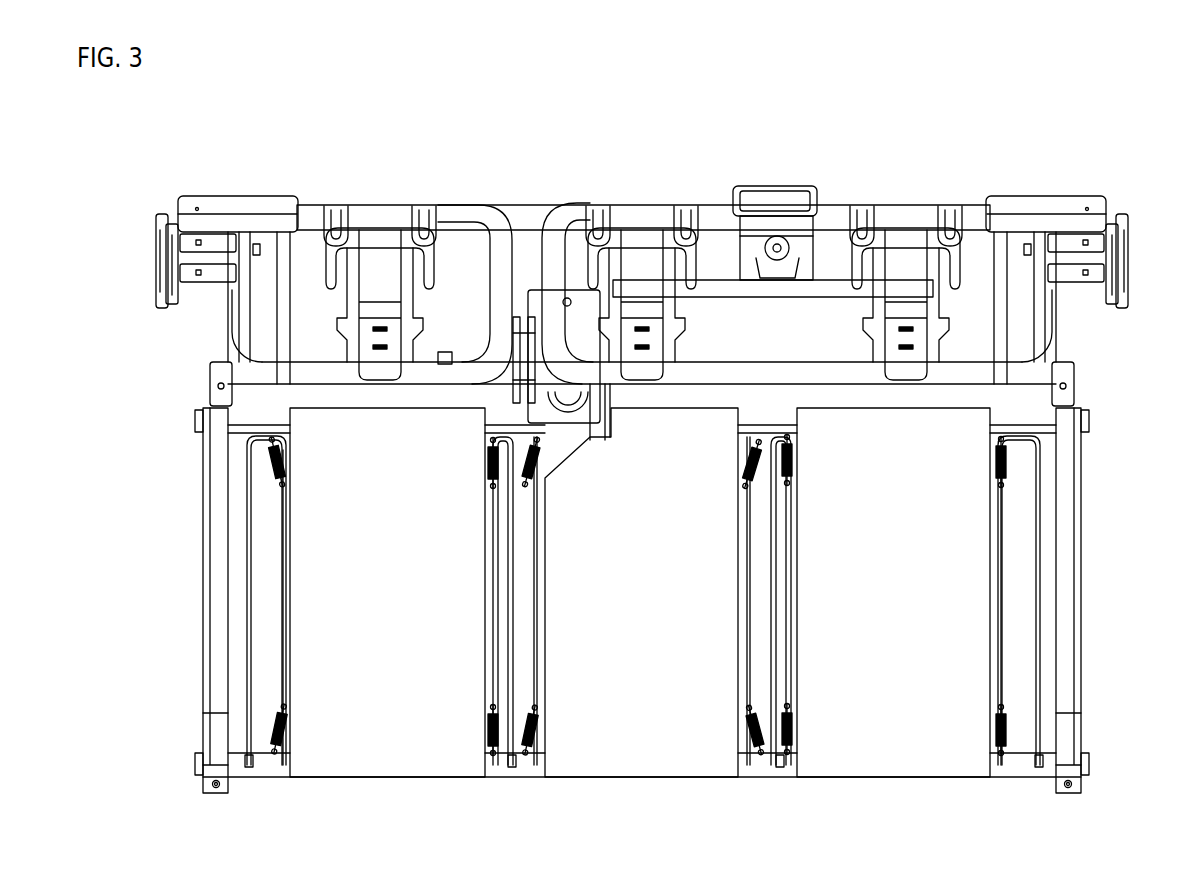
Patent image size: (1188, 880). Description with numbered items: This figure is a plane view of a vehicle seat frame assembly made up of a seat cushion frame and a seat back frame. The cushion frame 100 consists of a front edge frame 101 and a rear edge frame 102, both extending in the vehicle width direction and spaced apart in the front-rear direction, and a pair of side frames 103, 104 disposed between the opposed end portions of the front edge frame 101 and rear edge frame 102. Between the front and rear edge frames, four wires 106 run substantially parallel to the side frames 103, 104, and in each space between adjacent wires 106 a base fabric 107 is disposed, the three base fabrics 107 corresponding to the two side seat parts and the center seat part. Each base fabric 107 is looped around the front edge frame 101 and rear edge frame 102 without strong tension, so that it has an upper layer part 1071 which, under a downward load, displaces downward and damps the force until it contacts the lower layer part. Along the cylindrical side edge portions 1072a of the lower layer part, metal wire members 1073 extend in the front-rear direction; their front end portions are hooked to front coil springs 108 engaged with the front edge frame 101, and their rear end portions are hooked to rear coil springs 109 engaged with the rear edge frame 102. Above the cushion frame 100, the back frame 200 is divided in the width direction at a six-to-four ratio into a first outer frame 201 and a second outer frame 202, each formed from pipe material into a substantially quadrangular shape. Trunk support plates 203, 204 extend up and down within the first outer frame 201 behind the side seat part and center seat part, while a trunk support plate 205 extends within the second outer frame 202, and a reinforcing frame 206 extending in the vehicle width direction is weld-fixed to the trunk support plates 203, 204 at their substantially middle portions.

The cushion frame 100 is at (199, 529).
The front edge frame 101 is at (1090, 763).
The rear edge frame 102 is at (1090, 421).
The side frame 103 is at (1082, 530).
The side frame 104 is at (214, 662).
The wire 106 is at (248, 770).
The base fabric 107 is at (385, 741).
The upper layer part 1071 is at (331, 748).
The side edge portion 1072a is at (280, 617).
The wire member 1073 is at (287, 570).
The front coil spring 108 is at (488, 730).
The rear coil spring 109 is at (270, 460).
The back frame 200 is at (320, 195).
The first outer frame 201 is at (548, 215).
The second outer frame 202 is at (490, 207).
The trunk support plate 203 is at (943, 305).
The trunk support plate 204 is at (667, 310).
The trunk support plate 205 is at (385, 287).
The reinforcing frame 206 is at (782, 289).